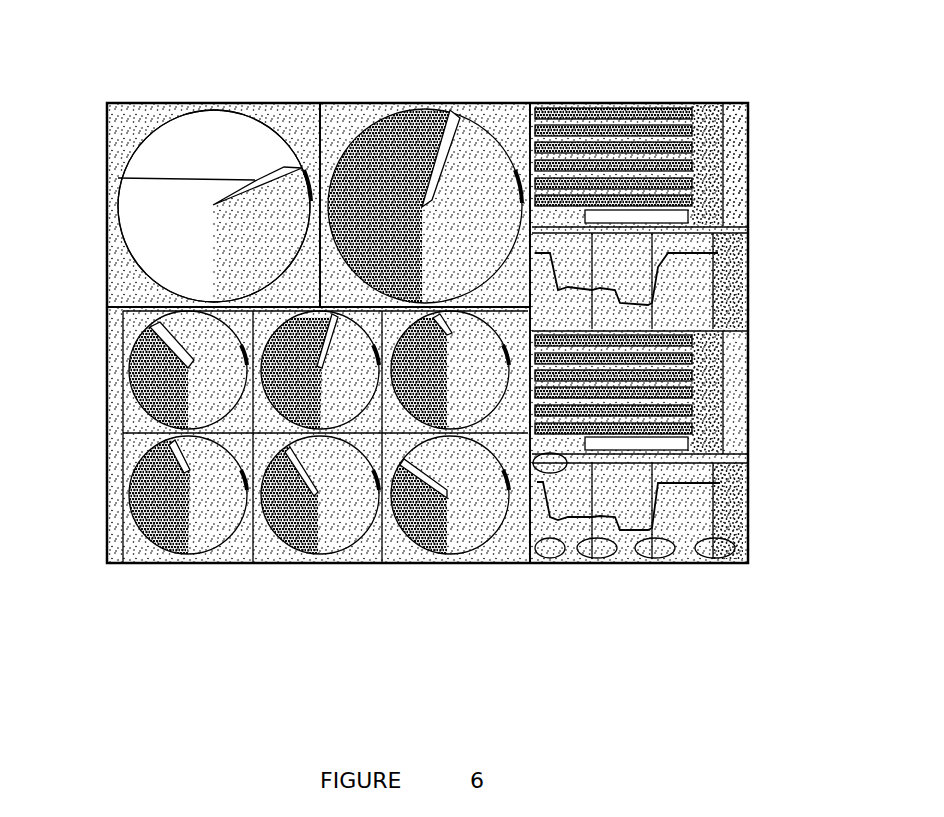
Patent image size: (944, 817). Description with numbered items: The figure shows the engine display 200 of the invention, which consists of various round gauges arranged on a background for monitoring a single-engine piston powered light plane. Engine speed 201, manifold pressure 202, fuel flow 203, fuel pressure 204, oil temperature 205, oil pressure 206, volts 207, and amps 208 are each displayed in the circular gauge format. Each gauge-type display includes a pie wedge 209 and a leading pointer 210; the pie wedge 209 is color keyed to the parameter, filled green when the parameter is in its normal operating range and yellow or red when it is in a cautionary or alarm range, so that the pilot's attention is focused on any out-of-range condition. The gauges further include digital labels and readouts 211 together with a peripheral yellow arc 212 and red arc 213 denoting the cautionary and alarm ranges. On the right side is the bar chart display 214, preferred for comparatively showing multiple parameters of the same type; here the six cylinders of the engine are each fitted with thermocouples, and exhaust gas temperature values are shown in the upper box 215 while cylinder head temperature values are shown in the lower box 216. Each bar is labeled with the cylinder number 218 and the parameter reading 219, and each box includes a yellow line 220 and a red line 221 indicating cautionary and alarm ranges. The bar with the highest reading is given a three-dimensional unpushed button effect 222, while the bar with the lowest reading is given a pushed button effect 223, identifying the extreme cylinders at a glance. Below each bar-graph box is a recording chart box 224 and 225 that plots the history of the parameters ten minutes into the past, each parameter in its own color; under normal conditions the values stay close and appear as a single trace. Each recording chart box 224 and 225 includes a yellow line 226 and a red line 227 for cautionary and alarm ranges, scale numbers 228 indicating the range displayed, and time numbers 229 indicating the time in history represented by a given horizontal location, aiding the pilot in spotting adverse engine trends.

The engine display 200 is at (503, 100).
The engine speed 201 is at (177, 183).
The manifold pressure 202 is at (408, 115).
The fuel flow 203 is at (147, 385).
The fuel pressure 204 is at (139, 536).
The oil temperature 205 is at (305, 475).
The oil pressure 206 is at (300, 545).
The volts 207 is at (443, 472).
The amps 208 is at (432, 545).
The pie wedge 209 is at (130, 213).
The leading pointer 210 is at (118, 178).
The digital labels and readouts 211 is at (180, 553).
The peripheral yellow arc 212 is at (150, 545).
The peripheral red arc 213 is at (175, 548).
The bar chart display 214 is at (713, 102).
The upper box 215 is at (745, 217).
The lower box 216 is at (677, 134).
The cylinder number 218 is at (550, 104).
The parameter reading 219 is at (595, 104).
The yellow line 220 is at (745, 140).
The red line 221 is at (745, 173).
The unpushed button effect 222 is at (745, 115).
The pushed button effect 223 is at (683, 102).
The recording chart box 224 is at (745, 312).
The recording chart box 225 is at (674, 533).
The yellow line 226 is at (745, 477).
The red line 227 is at (745, 458).
The scale numbers 228 is at (545, 558).
The time numbers 229 is at (603, 558).